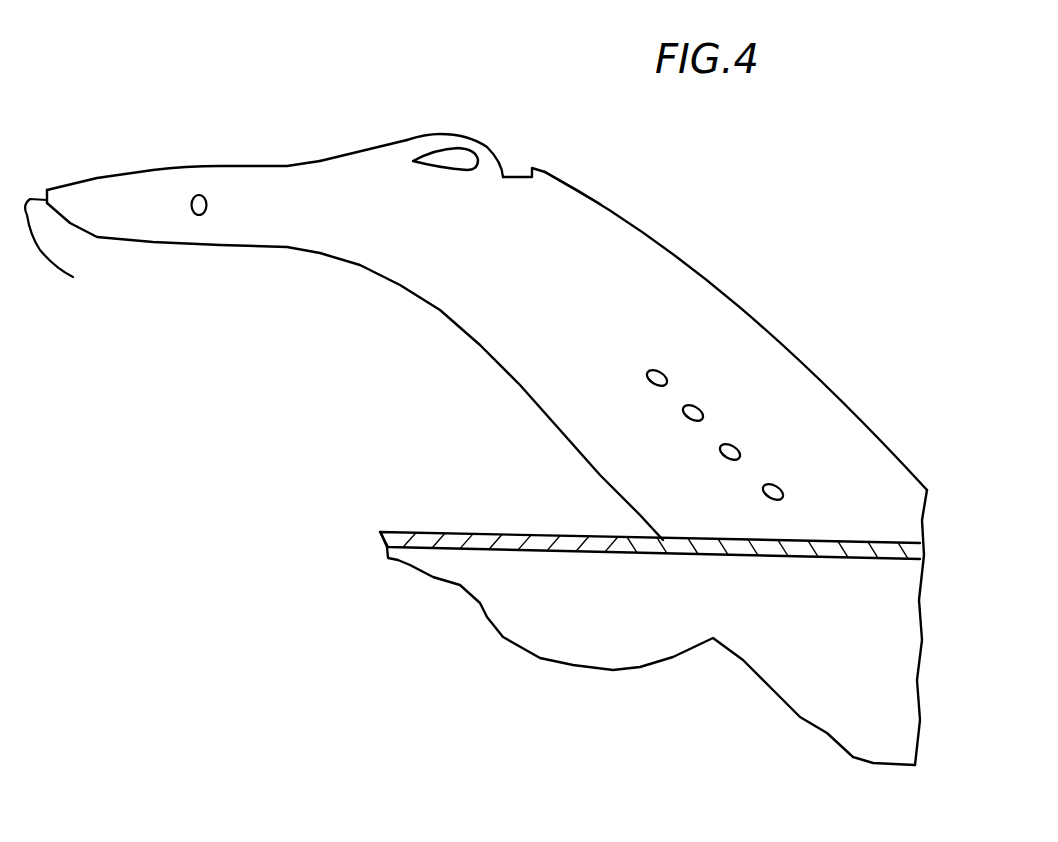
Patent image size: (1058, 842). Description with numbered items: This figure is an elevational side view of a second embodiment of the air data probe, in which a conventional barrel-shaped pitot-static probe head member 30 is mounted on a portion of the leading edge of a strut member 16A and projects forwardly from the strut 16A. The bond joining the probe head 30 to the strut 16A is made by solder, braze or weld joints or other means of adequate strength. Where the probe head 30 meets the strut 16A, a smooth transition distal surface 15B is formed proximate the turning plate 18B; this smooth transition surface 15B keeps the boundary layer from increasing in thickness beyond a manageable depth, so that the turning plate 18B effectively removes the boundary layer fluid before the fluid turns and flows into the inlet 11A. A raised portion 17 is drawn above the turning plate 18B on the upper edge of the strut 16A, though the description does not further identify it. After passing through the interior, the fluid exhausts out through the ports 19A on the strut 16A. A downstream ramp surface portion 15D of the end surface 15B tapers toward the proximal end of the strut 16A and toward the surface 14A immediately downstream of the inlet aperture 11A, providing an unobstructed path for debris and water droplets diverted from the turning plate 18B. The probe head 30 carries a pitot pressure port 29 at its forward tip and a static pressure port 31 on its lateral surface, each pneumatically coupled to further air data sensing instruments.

The probe head member 30 is at (143, 169).
The smooth transition distal surface 15B is at (293, 159).
The raised hump 17 is at (460, 158).
The turning plate 18B is at (407, 138).
The inlet aperture 11A is at (517, 167).
The downstream ramp surface portion 15D is at (547, 172).
The strut member 16A is at (765, 322).
The surface 14A is at (533, 533).
The ports 19A is at (697, 405).
The static pressure port 31 is at (199, 215).
The pitot pressure port 29 is at (68, 247).